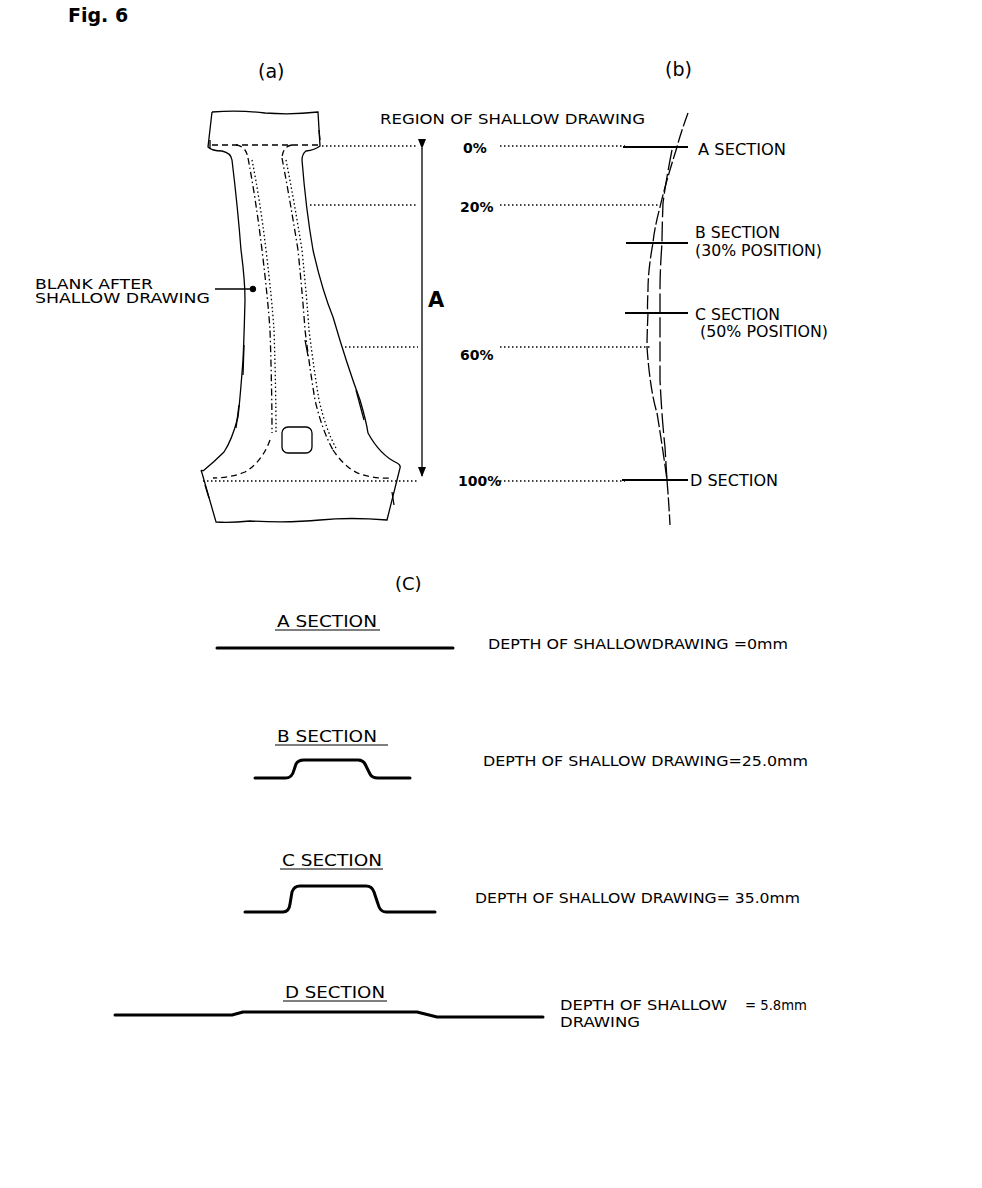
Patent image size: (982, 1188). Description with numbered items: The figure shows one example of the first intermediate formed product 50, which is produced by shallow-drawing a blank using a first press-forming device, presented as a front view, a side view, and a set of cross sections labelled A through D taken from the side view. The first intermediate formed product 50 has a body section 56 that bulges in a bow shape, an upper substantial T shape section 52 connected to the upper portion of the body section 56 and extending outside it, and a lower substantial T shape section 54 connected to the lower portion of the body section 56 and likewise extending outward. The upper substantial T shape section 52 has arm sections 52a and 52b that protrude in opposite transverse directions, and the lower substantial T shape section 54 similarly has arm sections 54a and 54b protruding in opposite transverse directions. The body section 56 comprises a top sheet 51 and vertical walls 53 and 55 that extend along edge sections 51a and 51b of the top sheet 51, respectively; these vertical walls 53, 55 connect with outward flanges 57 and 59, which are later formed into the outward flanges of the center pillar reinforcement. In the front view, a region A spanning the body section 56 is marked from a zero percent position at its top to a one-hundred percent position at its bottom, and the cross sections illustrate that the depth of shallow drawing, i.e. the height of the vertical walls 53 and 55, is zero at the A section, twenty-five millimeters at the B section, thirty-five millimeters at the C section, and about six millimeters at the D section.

The first intermediate formed product 50 is at (190, 197).
The top sheet 51 is at (284, 266).
The edge section 51a is at (262, 259).
The edge section 51b is at (303, 288).
The upper substantial T shape section 52 is at (262, 128).
The arm section 52a is at (214, 128).
The arm section 52b is at (318, 124).
The vertical wall 53 is at (268, 353).
The lower substantial T shape section 54 is at (310, 500).
The arm section 54a is at (222, 500).
The arm section 54b is at (377, 502).
The vertical wall 55 is at (307, 348).
The body section 56 is at (293, 322).
The outward flange 57 is at (253, 414).
The outward flange 59 is at (345, 407).